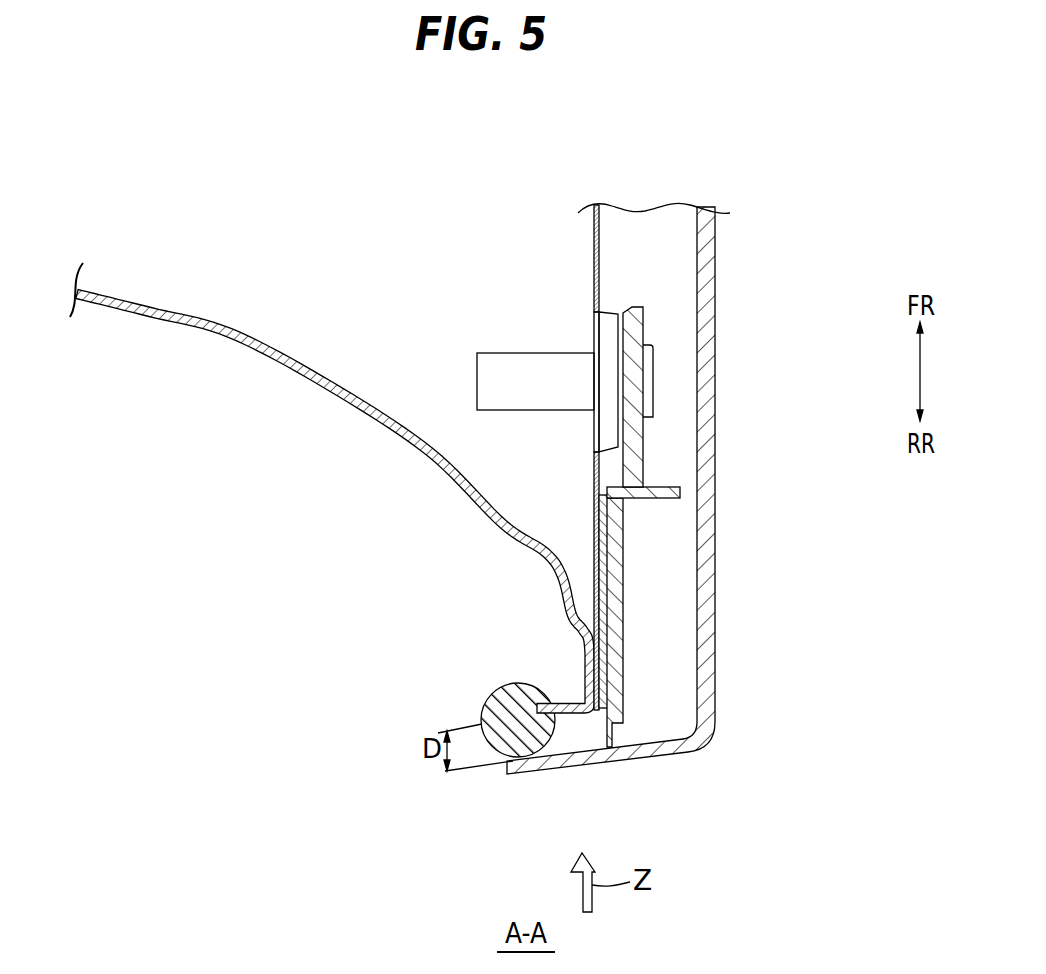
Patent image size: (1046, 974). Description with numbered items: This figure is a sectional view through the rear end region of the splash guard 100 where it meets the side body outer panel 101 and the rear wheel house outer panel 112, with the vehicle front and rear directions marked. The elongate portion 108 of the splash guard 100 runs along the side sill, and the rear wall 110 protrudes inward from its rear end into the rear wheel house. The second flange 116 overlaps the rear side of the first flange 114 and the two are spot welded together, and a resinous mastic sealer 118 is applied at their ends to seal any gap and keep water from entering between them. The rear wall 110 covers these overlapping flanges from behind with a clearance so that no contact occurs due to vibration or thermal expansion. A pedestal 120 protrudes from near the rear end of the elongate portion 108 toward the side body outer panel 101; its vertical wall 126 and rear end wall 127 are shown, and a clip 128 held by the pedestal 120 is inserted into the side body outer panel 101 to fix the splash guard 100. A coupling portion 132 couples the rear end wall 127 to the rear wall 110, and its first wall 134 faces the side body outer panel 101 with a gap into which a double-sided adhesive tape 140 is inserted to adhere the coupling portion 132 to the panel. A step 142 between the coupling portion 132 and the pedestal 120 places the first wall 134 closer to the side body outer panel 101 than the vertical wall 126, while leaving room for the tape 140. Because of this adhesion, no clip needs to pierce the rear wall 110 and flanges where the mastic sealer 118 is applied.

The splash guard 100 is at (728, 396).
The side body outer panel 101 is at (592, 460).
The elongate portion 108 is at (717, 527).
The rear wall 110 is at (520, 773).
The rear wheel house outer panel 112 is at (385, 427).
The first flange 114 is at (567, 704).
The second flange 116 is at (570, 757).
The mastic sealer 118 is at (497, 692).
The pedestal 120 is at (642, 308).
The vertical wall 126 is at (639, 458).
The rear end wall 127 is at (658, 499).
The clip 128 is at (528, 357).
The coupling portion 132 is at (637, 606).
The first wall 134 is at (623, 683).
The double-sided adhesive tape 140 is at (603, 712).
The step 142 is at (596, 497).